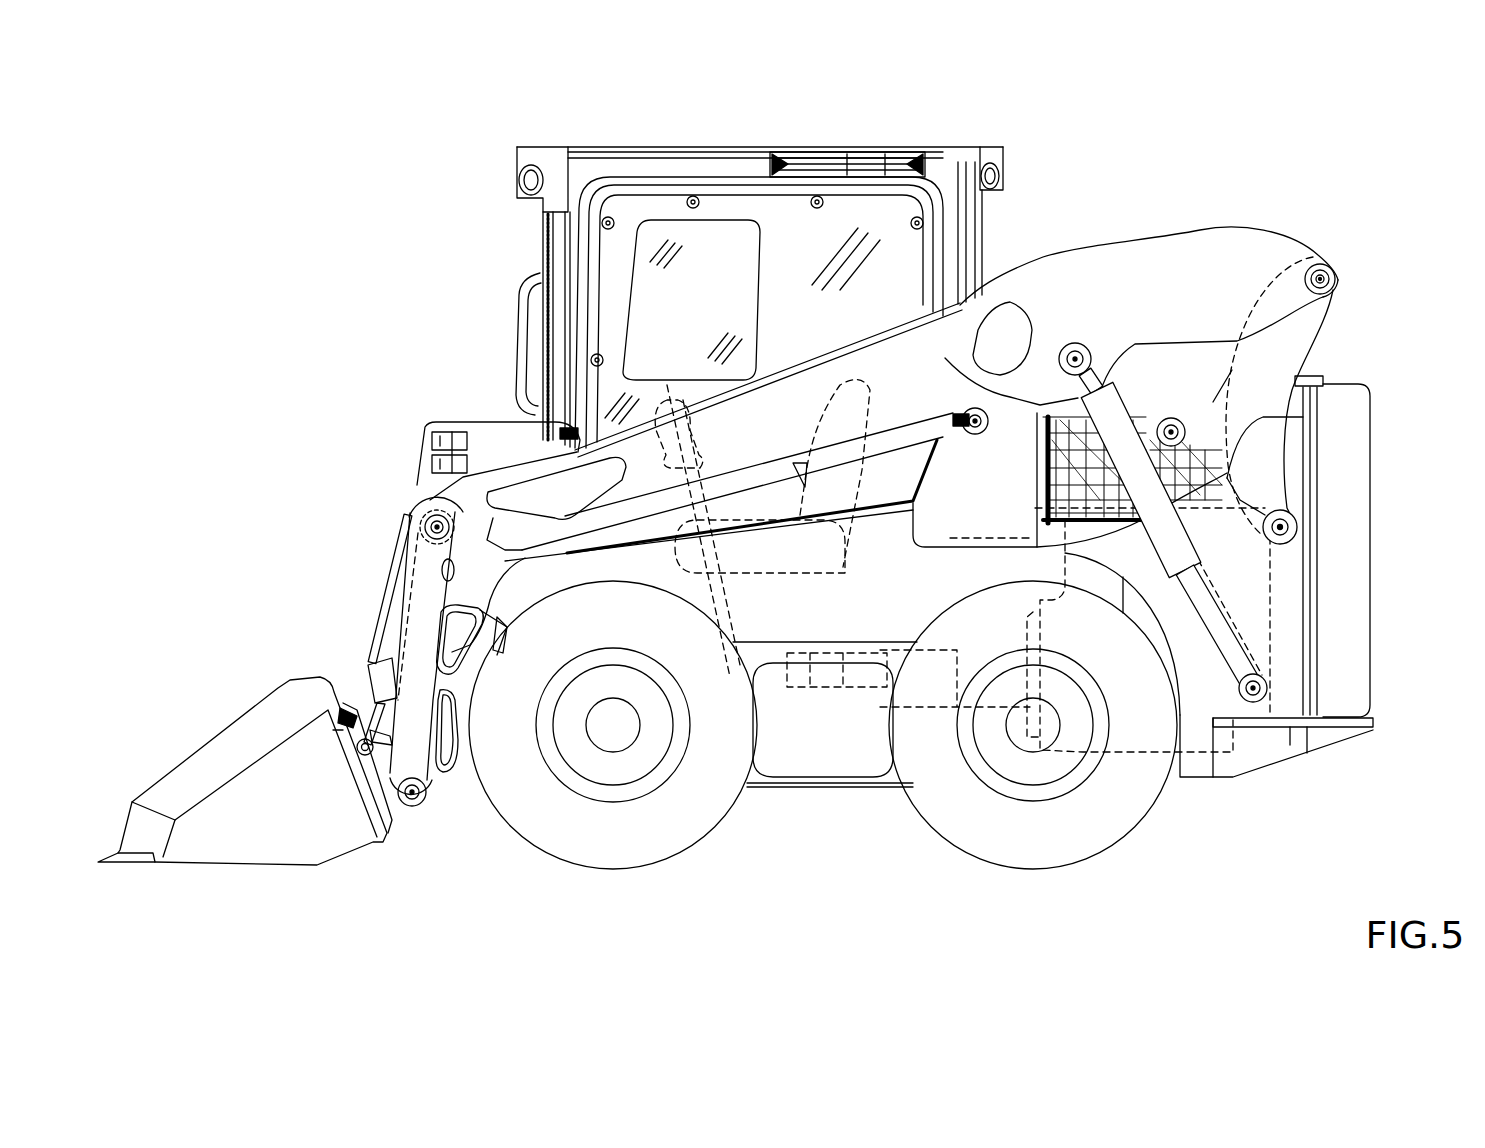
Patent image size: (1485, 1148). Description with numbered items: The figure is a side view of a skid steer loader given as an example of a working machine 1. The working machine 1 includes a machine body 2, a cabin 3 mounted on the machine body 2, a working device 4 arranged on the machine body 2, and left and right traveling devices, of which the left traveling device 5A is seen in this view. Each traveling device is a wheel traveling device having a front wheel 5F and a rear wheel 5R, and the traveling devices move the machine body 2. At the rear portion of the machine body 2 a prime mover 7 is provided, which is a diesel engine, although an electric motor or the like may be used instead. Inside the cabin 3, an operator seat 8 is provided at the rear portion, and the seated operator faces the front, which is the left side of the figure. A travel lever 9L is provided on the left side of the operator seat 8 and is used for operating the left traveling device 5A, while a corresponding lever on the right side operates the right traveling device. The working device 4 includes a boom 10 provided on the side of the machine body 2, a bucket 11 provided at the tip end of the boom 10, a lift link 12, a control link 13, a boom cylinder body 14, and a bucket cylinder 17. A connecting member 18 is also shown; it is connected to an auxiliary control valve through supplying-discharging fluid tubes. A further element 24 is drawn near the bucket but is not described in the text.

The working machine 1 is at (388, 238).
The machine body 2 is at (815, 810).
The cabin 3 is at (927, 147).
The working device 4 is at (1223, 202).
The traveling device 5A is at (529, 872).
The front wheel 5F is at (667, 865).
The rear wheel 5R is at (1135, 835).
The prime mover 7 is at (1270, 607).
The operator seat 8 is at (850, 380).
The travel lever 9L is at (664, 400).
The boom 10 is at (898, 300).
The bucket 11 is at (209, 746).
The lift link 12 is at (1325, 328).
The control link 13 is at (1020, 412).
The boom cylinder body 14 is at (1152, 341).
The bucket cylinder 17 is at (388, 632).
The connecting member 18 is at (444, 410).
The bucket bracket 24 is at (394, 810).